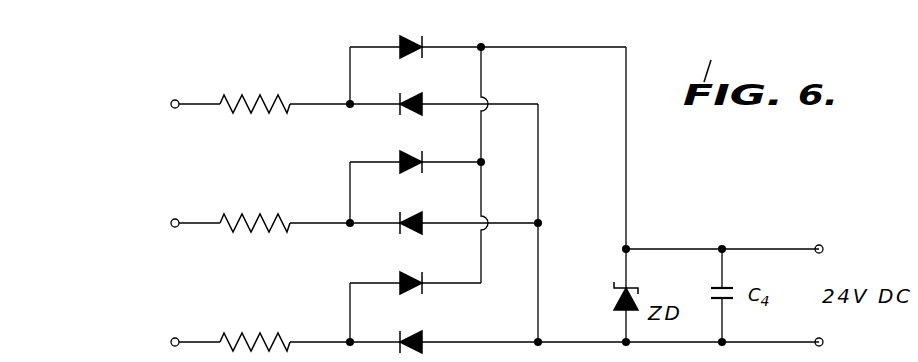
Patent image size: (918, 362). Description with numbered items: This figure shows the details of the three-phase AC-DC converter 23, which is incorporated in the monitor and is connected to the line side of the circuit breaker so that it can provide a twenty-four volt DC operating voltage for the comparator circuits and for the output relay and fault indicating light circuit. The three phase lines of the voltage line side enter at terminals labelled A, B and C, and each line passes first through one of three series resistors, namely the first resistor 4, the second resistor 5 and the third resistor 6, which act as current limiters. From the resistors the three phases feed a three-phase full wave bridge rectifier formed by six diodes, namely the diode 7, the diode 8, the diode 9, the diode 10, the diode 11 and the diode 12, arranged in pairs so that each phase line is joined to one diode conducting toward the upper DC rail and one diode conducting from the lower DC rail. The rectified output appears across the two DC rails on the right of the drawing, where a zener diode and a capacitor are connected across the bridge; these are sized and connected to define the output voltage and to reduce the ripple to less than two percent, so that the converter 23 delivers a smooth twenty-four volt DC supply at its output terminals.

The three-phase AC-DC converter 23 is at (163, 280).
The resistor R4 4 is at (255, 91).
The resistor R5 5 is at (255, 210).
The resistor R6 6 is at (255, 328).
The diode D7 7 is at (429, 38).
The diode D8 8 is at (429, 94).
The diode D9 9 is at (428, 153).
The diode D10 10 is at (433, 213).
The diode D11 11 is at (433, 273).
The diode D12 12 is at (433, 331).